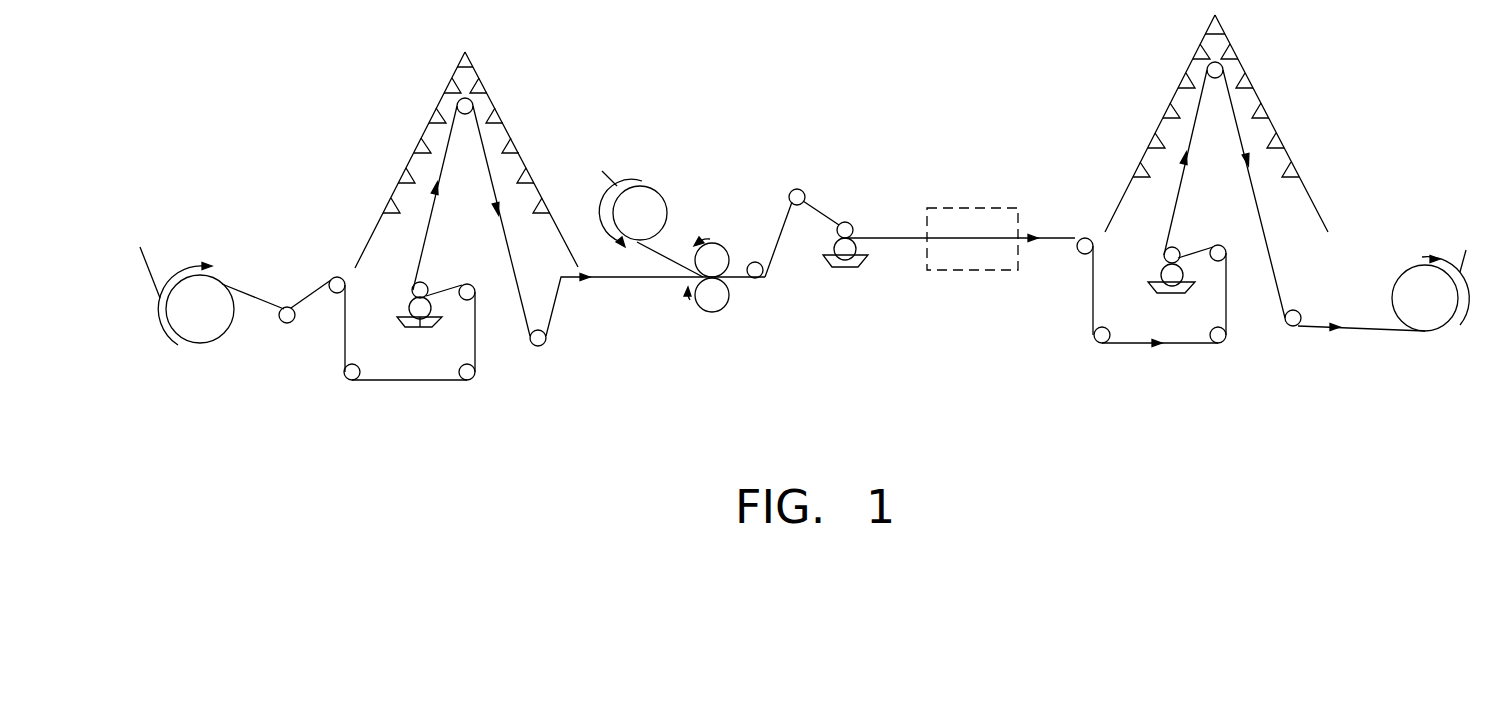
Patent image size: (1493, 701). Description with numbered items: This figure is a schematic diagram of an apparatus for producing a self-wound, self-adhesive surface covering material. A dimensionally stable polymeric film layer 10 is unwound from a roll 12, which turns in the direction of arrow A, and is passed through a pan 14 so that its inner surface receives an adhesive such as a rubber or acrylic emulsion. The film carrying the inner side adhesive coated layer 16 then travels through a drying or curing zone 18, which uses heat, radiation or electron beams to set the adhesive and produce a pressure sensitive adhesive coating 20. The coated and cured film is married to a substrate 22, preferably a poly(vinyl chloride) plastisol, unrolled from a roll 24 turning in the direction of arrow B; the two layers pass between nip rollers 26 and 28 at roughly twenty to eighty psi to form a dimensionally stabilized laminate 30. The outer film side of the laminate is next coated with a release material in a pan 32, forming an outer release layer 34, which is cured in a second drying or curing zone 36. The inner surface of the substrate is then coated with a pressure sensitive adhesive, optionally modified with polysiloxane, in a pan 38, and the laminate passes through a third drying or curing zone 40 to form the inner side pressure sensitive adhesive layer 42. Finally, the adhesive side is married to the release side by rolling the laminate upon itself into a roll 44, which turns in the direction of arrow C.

The polymeric film layer 10 is at (243, 297).
The roll 12 is at (213, 330).
The pan 14 is at (427, 330).
The inner side adhesive coated layer 16 is at (421, 281).
The drying or curing zone 18 is at (418, 143).
The pressure sensitive adhesive coating 20 is at (627, 278).
The substrate 22 is at (668, 253).
The roll 24 is at (650, 197).
The nip roller 26 is at (713, 250).
The nip roller 28 is at (712, 303).
The dimensionally stabilized laminate 30 is at (820, 212).
The pan 32 is at (840, 267).
The outer release layer 34 is at (908, 238).
The second drying or curing zone 36 is at (967, 208).
The pan 38 is at (1177, 302).
The third drying or curing zone 40 is at (1173, 103).
The inner side pressure sensitive adhesive layer 42 is at (1367, 327).
The roll 44 is at (1403, 268).